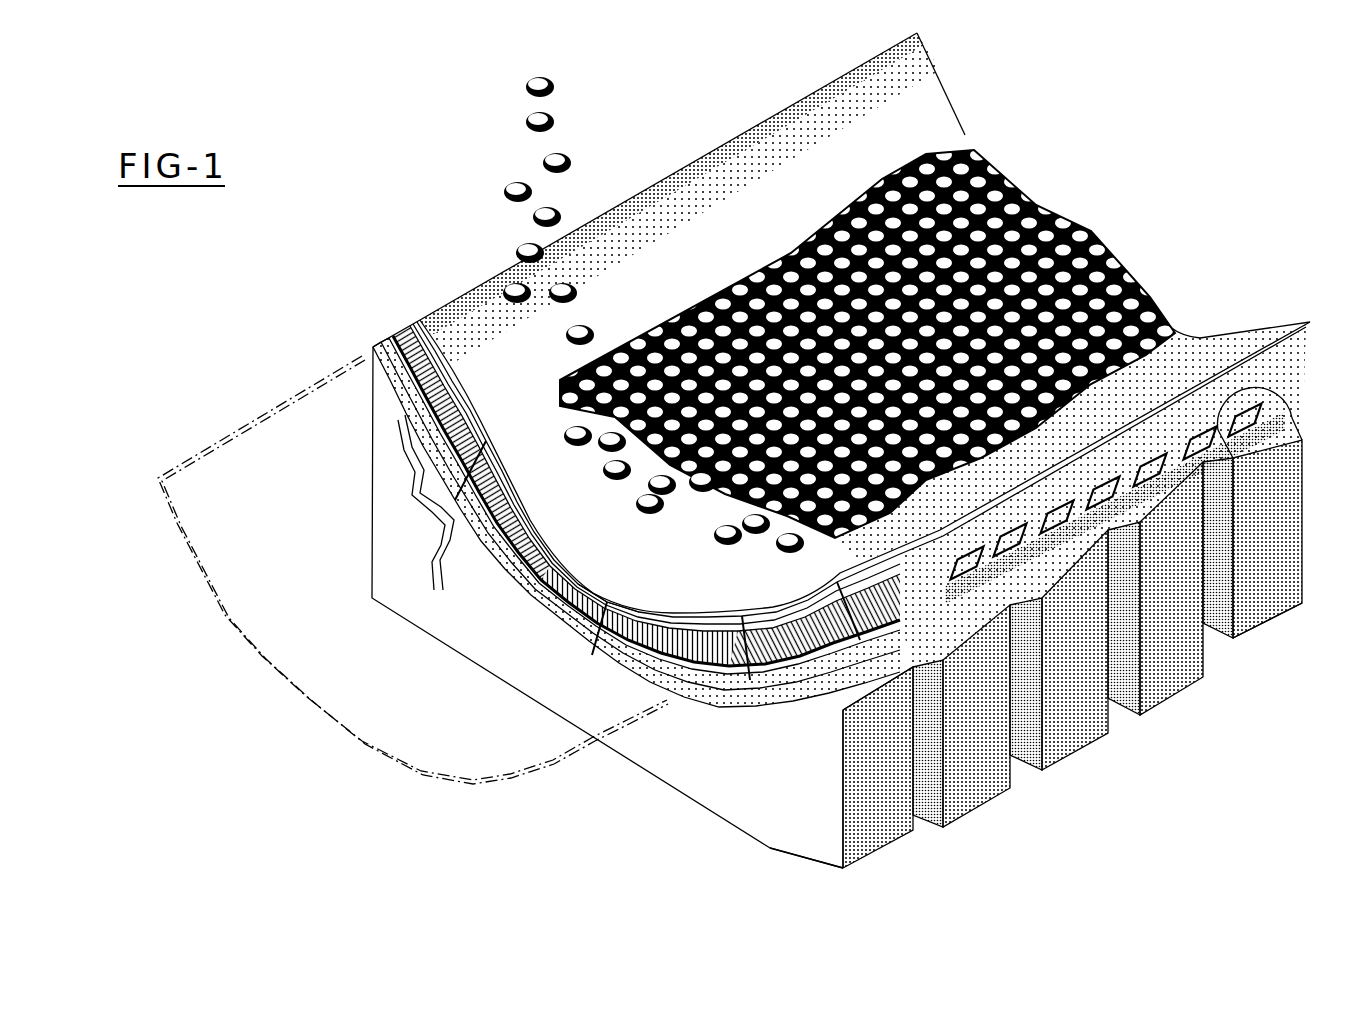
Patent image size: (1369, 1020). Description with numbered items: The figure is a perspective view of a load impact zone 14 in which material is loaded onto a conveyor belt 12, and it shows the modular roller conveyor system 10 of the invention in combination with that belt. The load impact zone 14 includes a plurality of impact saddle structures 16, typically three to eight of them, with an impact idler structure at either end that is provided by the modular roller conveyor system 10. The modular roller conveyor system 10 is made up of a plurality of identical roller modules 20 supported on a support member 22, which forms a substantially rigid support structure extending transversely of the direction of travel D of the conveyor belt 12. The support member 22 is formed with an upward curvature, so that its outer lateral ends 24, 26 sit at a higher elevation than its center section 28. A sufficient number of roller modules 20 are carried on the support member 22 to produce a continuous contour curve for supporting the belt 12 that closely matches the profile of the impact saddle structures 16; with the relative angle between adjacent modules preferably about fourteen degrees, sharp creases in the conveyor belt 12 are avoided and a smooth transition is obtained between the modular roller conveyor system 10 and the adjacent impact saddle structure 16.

The modular roller conveyor system 10 is at (905, 857).
The conveyor belt 12 is at (228, 430).
The load impact zone 14 is at (603, 196).
The impact saddle structures 16 is at (1160, 687).
The roller modules 20 is at (1262, 382).
The support member 22 is at (768, 815).
The outer lateral end 24 is at (840, 718).
The outer lateral end 26 is at (373, 350).
The center section 28 is at (590, 660).
The direction of travel D is at (1192, 266).